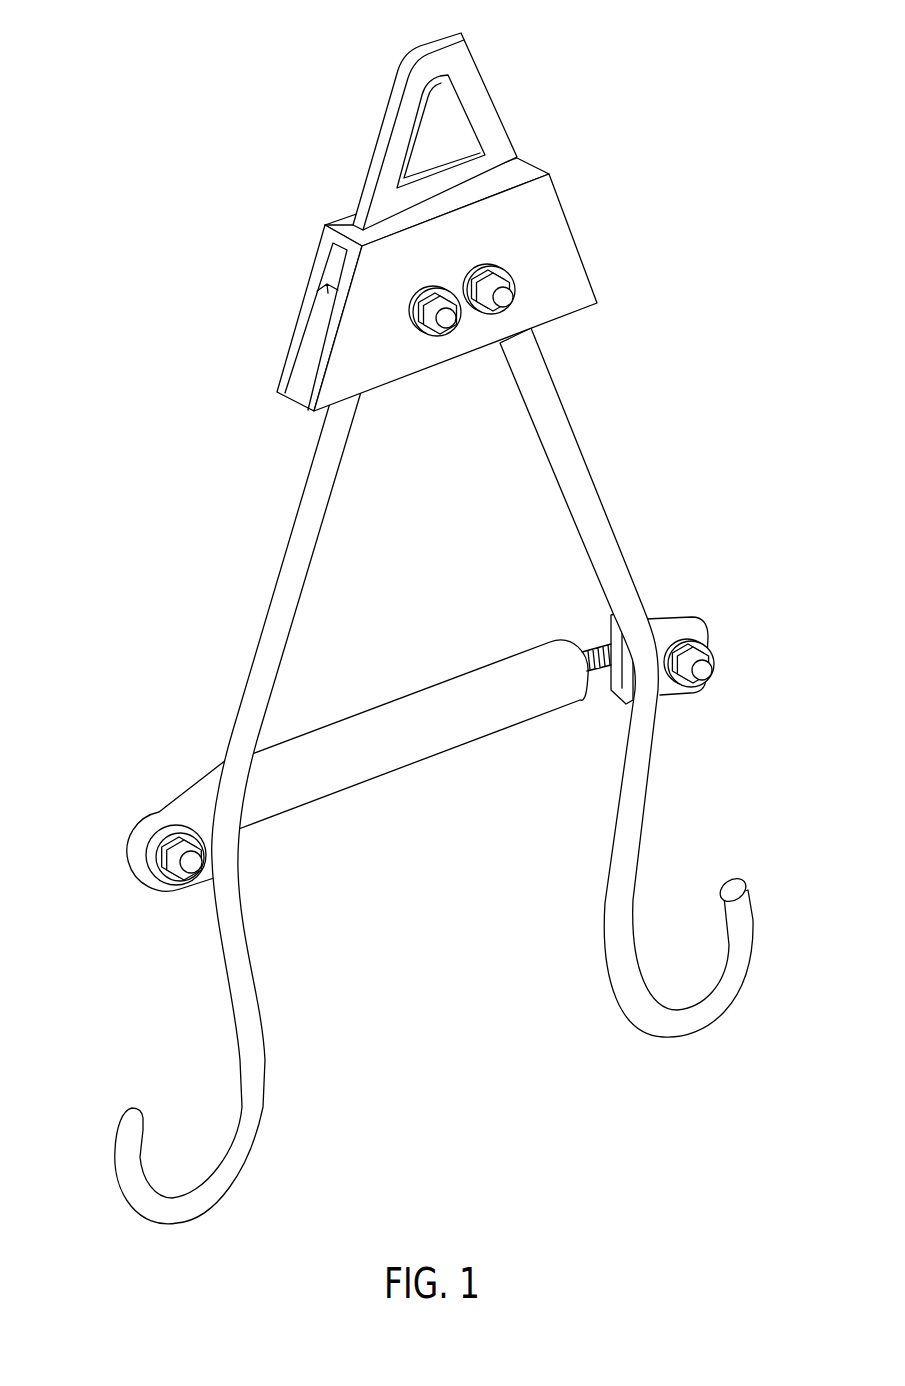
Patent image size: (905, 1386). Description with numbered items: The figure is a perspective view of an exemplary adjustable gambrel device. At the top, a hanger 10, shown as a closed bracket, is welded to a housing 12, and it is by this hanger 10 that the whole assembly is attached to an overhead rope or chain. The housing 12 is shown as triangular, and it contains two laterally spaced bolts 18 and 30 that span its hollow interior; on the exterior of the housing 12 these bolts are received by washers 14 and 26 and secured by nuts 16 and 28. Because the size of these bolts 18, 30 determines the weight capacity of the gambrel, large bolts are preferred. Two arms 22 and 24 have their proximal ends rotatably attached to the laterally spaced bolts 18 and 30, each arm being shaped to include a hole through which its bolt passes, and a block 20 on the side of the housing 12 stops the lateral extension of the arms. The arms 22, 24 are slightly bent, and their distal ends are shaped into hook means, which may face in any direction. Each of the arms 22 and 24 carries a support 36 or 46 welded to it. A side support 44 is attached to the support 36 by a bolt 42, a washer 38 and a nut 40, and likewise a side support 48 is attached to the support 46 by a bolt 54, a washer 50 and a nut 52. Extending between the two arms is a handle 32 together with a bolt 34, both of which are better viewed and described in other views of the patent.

The hanger 10 is at (467, 57).
The housing 12 is at (547, 207).
The washer 14 is at (500, 264).
The nut 16 is at (517, 288).
The bolt 18 is at (503, 300).
The block 20 is at (318, 330).
The arm 22 is at (330, 463).
The arm 24 is at (553, 417).
The washer 26 is at (413, 330).
The nut 28 is at (425, 327).
The bolt 30 is at (448, 320).
The handle 32 is at (457, 690).
The bolt 34 is at (611, 648).
The support 36 is at (668, 632).
The washer 38 is at (692, 638).
The nut 40 is at (707, 650).
The bolt 42 is at (703, 672).
The side support 44 is at (622, 698).
The support 46 is at (208, 795).
The side support 48 is at (138, 845).
The washer 50 is at (157, 862).
The nut 52 is at (172, 867).
The bolt 54 is at (188, 868).